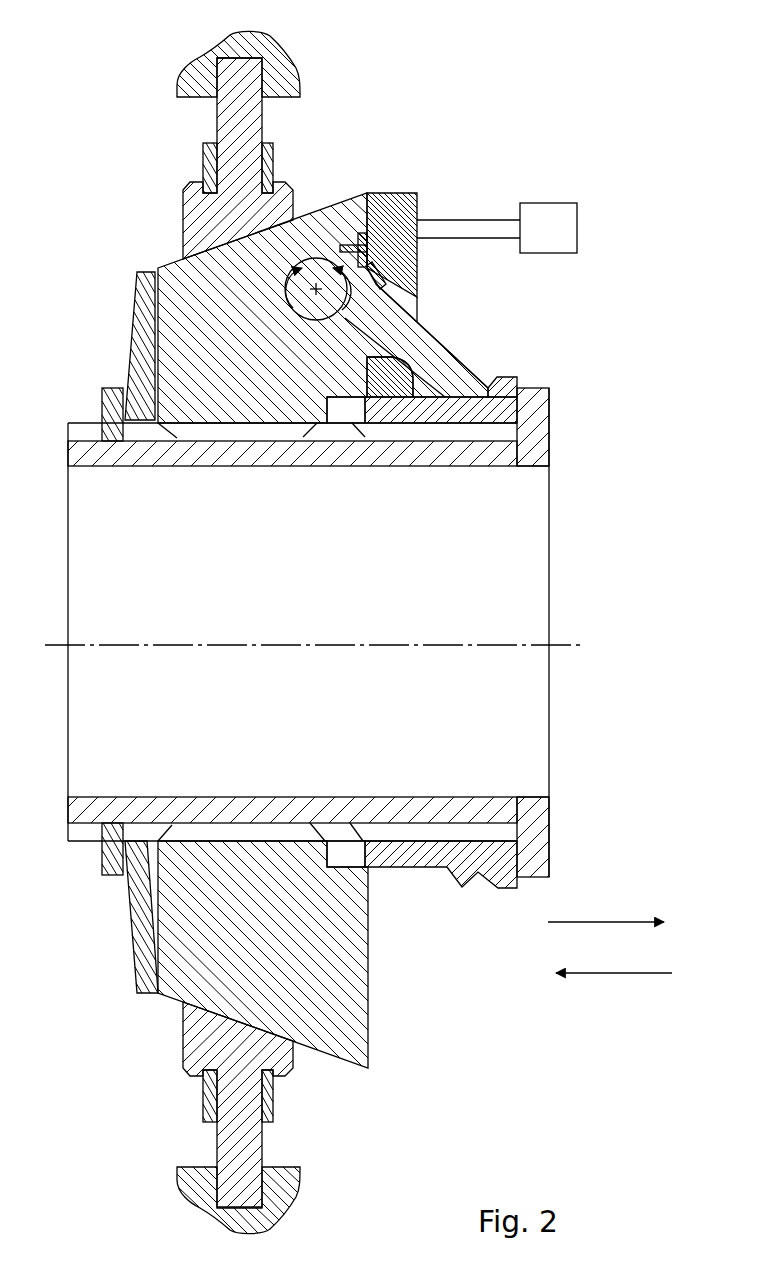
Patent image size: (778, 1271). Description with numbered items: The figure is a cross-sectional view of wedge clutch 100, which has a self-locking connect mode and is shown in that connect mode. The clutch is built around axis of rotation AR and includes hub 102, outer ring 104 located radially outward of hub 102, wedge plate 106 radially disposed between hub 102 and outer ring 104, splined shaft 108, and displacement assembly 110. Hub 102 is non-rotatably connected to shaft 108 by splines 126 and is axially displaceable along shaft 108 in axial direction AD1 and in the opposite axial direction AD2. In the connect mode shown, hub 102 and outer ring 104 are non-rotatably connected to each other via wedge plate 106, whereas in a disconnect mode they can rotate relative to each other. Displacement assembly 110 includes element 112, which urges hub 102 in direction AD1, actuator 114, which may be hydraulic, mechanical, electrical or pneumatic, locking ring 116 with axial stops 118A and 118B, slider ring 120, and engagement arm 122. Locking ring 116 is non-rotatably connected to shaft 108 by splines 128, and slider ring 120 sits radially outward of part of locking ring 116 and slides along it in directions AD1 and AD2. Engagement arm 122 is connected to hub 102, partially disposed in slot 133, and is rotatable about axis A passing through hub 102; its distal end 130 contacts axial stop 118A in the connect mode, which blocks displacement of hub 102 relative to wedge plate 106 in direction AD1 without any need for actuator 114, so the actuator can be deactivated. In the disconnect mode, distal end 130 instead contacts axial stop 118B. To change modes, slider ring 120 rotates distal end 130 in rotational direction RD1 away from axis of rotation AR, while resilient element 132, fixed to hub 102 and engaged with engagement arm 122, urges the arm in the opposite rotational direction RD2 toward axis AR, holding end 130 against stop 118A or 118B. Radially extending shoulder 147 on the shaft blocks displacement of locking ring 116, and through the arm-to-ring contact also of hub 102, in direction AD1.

The wedge clutch 100 is at (522, 58).
The hub 102 is at (237, 264).
The outer ring 104 is at (226, 33).
The wedge plate 106 is at (217, 118).
The splined shaft 108 is at (196, 467).
The displacement assembly 110 is at (518, 152).
The element 112 is at (137, 285).
The actuator 114 is at (552, 203).
The locking ring 116 is at (510, 374).
The axial stop 118A is at (450, 383).
The axial stop 118B is at (487, 378).
The slider ring 120 is at (405, 193).
The engagement arm 122 is at (430, 336).
The splines 126 is at (287, 433).
The splines 128 is at (452, 432).
The distal end 130 is at (462, 378).
The resilient element 132 is at (358, 193).
The slot 133 is at (287, 303).
The radially extending shoulder 147 is at (542, 400).
The axis A is at (314, 293).
The axis of rotation AR is at (573, 647).
The axial direction AD1 is at (588, 920).
The axial direction AD2 is at (610, 975).
The rotational direction RD1 is at (338, 295).
The rotational direction RD2 is at (290, 272).